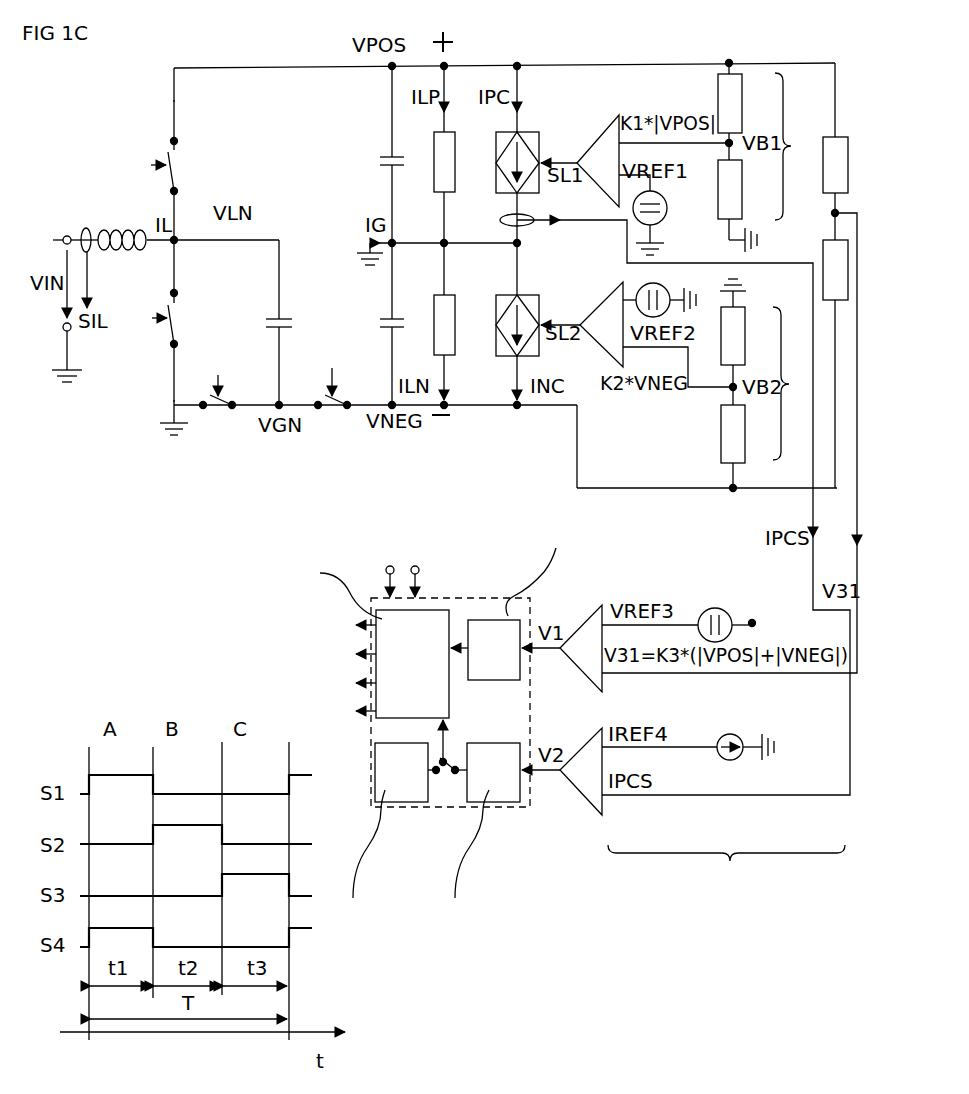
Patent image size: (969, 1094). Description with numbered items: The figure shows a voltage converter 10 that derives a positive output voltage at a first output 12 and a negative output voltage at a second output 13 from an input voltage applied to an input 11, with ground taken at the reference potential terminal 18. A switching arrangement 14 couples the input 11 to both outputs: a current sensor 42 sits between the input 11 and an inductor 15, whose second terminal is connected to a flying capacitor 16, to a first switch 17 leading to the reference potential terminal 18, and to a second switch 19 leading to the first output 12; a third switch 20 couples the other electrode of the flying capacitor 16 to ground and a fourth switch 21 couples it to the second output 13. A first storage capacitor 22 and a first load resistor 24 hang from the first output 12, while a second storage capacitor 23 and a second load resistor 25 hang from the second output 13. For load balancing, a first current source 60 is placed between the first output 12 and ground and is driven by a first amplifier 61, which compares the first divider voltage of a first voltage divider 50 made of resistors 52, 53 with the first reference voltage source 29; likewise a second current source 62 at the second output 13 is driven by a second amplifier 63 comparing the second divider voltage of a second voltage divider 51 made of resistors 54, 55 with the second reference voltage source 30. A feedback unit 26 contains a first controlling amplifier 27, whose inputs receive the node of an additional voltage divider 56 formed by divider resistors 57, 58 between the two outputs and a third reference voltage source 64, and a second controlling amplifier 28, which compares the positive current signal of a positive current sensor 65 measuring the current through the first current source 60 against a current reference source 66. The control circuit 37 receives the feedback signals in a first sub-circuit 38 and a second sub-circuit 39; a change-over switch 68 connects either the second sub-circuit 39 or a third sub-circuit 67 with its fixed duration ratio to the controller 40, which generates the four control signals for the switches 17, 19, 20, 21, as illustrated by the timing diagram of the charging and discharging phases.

The voltage converter 10 is at (100, 128).
The input 11 is at (58, 235).
The first output 12 is at (450, 64).
The second output 13 is at (458, 408).
The switching arrangement 14 is at (148, 114).
The inductor 15 is at (122, 224).
The flying capacitor 16 is at (284, 310).
The first switch 17 is at (172, 336).
The reference potential terminal 18 is at (70, 370).
The second switch 19 is at (175, 163).
The third switch 20 is at (218, 410).
The fourth switch 21 is at (332, 410).
The first storage capacitor 22 is at (378, 156).
The second storage capacitor 23 is at (380, 318).
The first load resistor 24 is at (437, 173).
The second load resistor 25 is at (436, 348).
The feedback unit 26 is at (726, 871).
The first controlling amplifier 27 is at (572, 622).
The second controlling amplifier 28 is at (572, 746).
The first reference voltage source 29 is at (667, 208).
The second reference voltage source 30 is at (640, 286).
The control circuit 37 is at (457, 808).
The first sub-circuit 38 is at (510, 625).
The second sub-circuit 39 is at (500, 805).
The controller 40 is at (384, 719).
The current sensor 42 is at (82, 228).
The first voltage divider 50 is at (798, 146).
The second voltage divider 51 is at (795, 383).
The divider resistor 52 is at (742, 78).
The divider resistor 53 is at (734, 216).
The divider resistor 54 is at (737, 456).
The divider resistor 55 is at (745, 312).
The additional voltage divider 56 is at (844, 76).
The first divider resistor 57 is at (844, 155).
The second divider resistor 58 is at (822, 262).
The first current source 60 is at (506, 173).
The first amplifier 61 is at (596, 134).
The second current source 62 is at (506, 348).
The second amplifier 63 is at (602, 302).
The third reference voltage source 64 is at (708, 606).
The positive current sensor 65 is at (506, 226).
The current reference source 66 is at (728, 738).
The third sub-circuit 67 is at (394, 805).
The change-over switch 68 is at (438, 744).